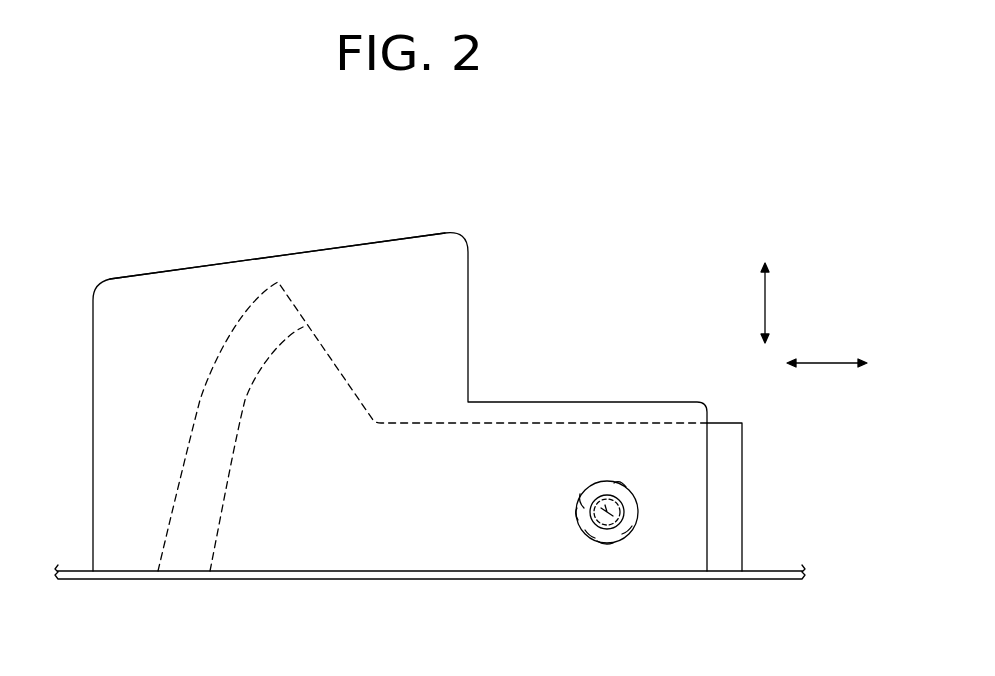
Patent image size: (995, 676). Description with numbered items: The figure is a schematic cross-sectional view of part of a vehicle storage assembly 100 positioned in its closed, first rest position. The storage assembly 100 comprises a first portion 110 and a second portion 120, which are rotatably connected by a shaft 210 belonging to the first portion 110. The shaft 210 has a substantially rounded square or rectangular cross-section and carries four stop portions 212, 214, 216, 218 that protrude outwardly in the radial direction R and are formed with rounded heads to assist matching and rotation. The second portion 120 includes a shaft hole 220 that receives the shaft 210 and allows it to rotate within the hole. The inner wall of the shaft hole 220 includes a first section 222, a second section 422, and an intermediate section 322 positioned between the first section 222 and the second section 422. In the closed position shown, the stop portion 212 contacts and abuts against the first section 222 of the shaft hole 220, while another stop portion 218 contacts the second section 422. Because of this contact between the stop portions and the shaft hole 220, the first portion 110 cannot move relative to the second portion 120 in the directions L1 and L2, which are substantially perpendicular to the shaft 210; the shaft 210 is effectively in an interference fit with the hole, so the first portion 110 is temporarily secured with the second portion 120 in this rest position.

The storage assembly 100 is at (616, 202).
The first portion 110 is at (243, 313).
The second portion 120 is at (370, 243).
The shaft 210 is at (620, 491).
The stop portion 212 is at (599, 497).
The stop portion 214 is at (624, 512).
The stop portion 216 is at (603, 542).
The stop portion 218 is at (576, 508).
The shaft hole 220 is at (630, 536).
The first section 222 is at (598, 490).
The intermediate section 322 is at (578, 500).
The second section 422 is at (582, 524).
The radial direction R is at (633, 514).
The direction L1 is at (779, 303).
The direction L2 is at (827, 352).